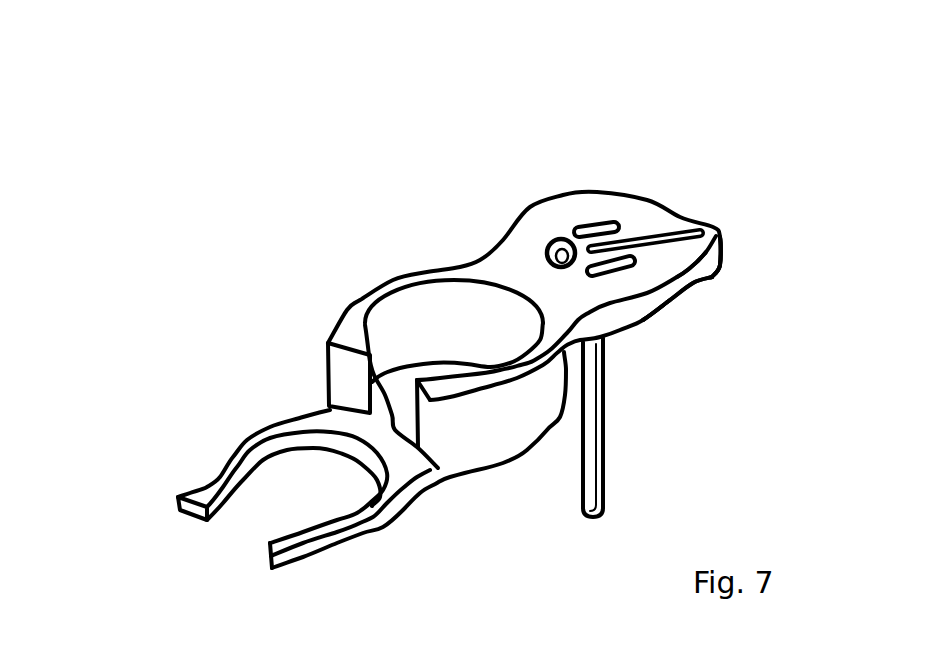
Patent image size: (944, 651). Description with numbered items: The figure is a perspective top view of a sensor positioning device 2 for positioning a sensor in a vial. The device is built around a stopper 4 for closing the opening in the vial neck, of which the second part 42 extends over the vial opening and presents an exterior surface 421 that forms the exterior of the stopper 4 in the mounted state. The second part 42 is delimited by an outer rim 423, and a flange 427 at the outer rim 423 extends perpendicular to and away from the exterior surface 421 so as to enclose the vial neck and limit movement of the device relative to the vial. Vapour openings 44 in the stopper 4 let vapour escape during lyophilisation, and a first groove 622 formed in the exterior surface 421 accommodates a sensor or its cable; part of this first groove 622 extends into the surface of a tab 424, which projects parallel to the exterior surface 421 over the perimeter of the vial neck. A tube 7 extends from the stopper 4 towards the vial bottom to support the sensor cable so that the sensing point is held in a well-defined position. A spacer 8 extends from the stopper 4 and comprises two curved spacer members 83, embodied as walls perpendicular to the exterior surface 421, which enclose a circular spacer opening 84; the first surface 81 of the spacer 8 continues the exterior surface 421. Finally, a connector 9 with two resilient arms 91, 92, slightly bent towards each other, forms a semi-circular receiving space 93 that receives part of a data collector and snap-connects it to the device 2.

The sensor positioning device 2 is at (183, 236).
The stopper 4 is at (478, 190).
The tube 7 is at (605, 392).
The spacer 8 is at (350, 250).
The connector 9 is at (188, 377).
The second part 42 is at (542, 220).
The vapour openings 44 is at (545, 246).
The first surface 81 is at (358, 317).
The spacer members 83 is at (498, 417).
The spacer opening 84 is at (463, 373).
The arm 91 is at (225, 470).
The arm 92 is at (357, 522).
The receiving space 93 is at (280, 488).
The exterior surface 421 is at (637, 220).
The outer rim 423 is at (683, 278).
The tab 424 is at (718, 228).
The flange 427 is at (657, 308).
The first groove 622 is at (684, 215).